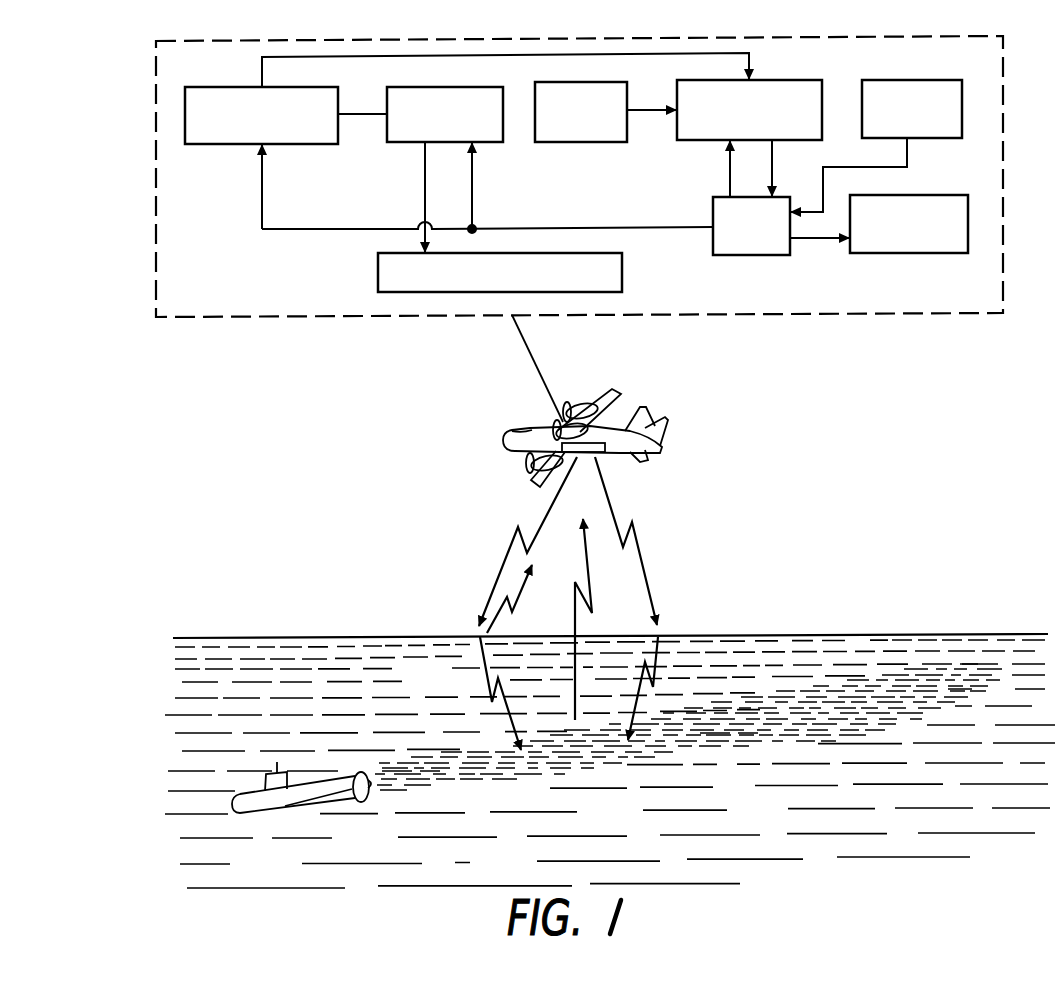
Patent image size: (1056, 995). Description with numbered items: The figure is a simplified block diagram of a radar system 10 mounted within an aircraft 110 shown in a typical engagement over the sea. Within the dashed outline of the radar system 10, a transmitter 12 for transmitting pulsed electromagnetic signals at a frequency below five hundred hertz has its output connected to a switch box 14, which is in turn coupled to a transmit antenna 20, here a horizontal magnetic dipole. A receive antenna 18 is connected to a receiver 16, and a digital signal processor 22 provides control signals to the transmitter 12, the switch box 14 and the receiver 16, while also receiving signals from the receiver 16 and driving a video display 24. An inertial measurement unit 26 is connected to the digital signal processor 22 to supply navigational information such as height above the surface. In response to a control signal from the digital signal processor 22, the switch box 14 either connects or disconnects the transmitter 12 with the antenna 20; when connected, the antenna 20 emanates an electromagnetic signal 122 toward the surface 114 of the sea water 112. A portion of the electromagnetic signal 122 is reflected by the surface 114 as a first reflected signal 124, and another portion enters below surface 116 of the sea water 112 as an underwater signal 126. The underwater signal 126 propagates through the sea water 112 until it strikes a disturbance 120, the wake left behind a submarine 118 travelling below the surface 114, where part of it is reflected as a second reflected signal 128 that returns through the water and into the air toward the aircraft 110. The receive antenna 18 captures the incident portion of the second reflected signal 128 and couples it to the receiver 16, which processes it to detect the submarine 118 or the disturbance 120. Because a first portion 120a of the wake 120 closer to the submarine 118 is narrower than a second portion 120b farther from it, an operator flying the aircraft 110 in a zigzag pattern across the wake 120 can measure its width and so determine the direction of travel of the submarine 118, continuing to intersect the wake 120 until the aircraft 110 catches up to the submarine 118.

The radar system 10 is at (892, 313).
The transmitter 12 is at (231, 147).
The switch box 14 is at (412, 145).
The receiver 16 is at (770, 80).
The receive antenna 18 is at (584, 143).
The transmit antenna 20 is at (622, 269).
The digital signal processor 22 is at (740, 256).
The video display 24 is at (913, 195).
The inertial measurement unit 26 is at (909, 80).
The aircraft 110 is at (657, 450).
The sea water 112 is at (852, 643).
The surface 114 is at (718, 634).
The below surface 116 is at (286, 869).
The submarine 118 is at (317, 808).
The disturbance 120 is at (578, 758).
The first portion of the wake 120a is at (473, 770).
The second portion of the wake 120b is at (727, 738).
The electromagnetic signal 122 is at (549, 510).
The first reflected signal 124 is at (516, 589).
The underwater signal 126 is at (485, 670).
The second reflected signal 128 is at (587, 563).